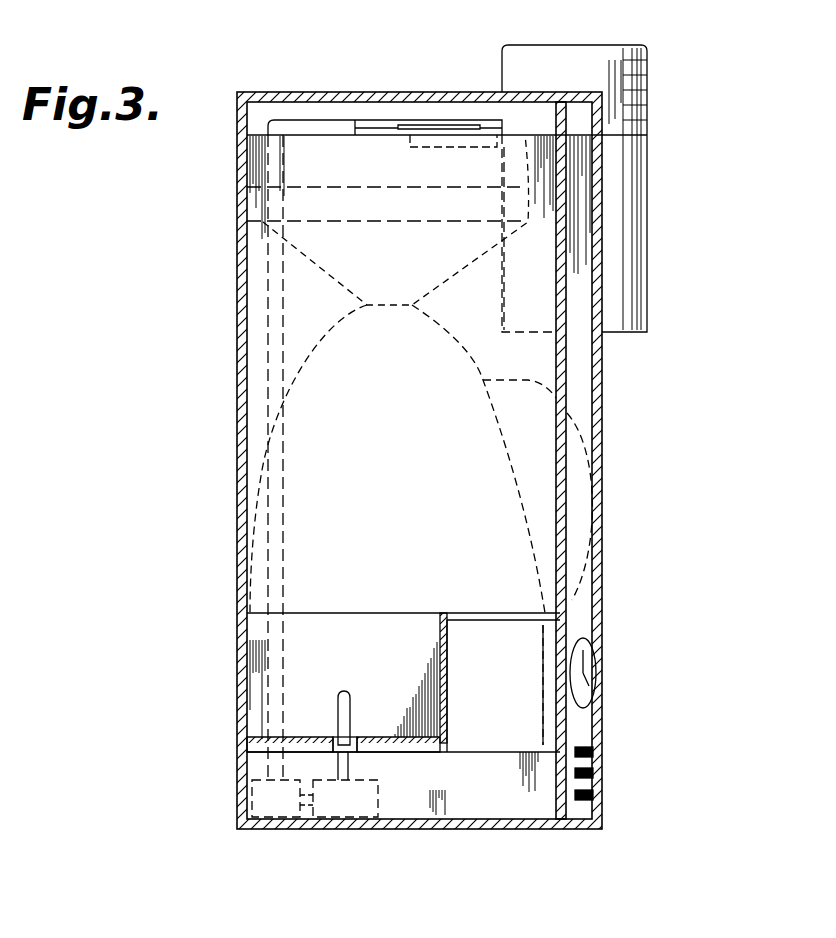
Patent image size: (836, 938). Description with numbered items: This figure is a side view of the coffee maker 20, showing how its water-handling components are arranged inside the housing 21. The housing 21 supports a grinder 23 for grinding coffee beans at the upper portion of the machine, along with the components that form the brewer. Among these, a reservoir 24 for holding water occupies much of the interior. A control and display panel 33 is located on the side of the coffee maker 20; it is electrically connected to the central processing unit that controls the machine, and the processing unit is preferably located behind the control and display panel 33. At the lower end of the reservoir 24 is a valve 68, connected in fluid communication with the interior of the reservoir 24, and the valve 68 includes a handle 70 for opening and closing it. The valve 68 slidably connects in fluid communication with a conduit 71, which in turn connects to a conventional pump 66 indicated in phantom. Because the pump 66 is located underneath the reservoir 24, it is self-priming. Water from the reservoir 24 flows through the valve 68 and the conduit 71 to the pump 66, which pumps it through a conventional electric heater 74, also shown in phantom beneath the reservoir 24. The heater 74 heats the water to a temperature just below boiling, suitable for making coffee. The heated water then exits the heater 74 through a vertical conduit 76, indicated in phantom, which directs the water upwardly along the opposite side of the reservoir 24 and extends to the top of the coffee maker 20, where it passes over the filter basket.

The coffee maker 20 is at (702, 128).
The housing 21 is at (240, 303).
The grinder 23 is at (608, 52).
The reservoir 24 is at (415, 550).
The control and display panel 33 is at (588, 732).
The pump 66 is at (348, 815).
The valve 68 is at (360, 745).
The handle 70 is at (338, 694).
The conduit 71 is at (372, 765).
The electric heater 74 is at (258, 800).
The vertical conduit 76 is at (310, 128).